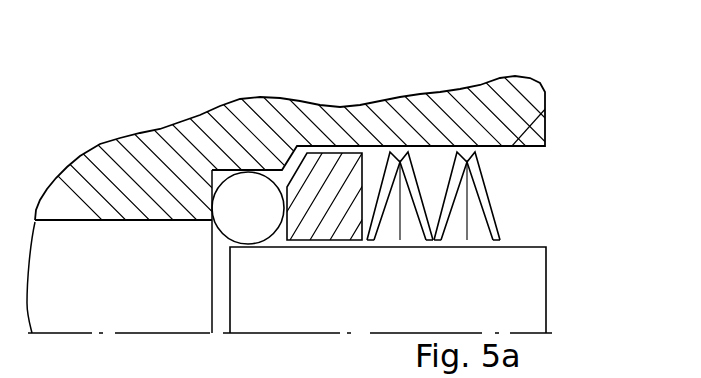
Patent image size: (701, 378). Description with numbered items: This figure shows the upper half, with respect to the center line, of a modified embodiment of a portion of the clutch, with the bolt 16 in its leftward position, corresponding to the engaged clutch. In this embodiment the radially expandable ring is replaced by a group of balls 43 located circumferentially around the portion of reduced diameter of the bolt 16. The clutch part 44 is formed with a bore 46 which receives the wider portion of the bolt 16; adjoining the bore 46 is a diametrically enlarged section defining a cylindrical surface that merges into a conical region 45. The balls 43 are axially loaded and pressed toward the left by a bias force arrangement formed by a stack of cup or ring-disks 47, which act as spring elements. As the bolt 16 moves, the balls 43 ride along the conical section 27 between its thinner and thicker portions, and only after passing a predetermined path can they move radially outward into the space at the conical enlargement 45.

The bolt 16 is at (546, 320).
The conical section 27 is at (220, 300).
The balls 43 is at (235, 208).
The clutch part 44 is at (382, 107).
The conical region 45 is at (281, 165).
The bore 46 is at (70, 220).
The stack of cup or ring-disks 47 is at (480, 177).